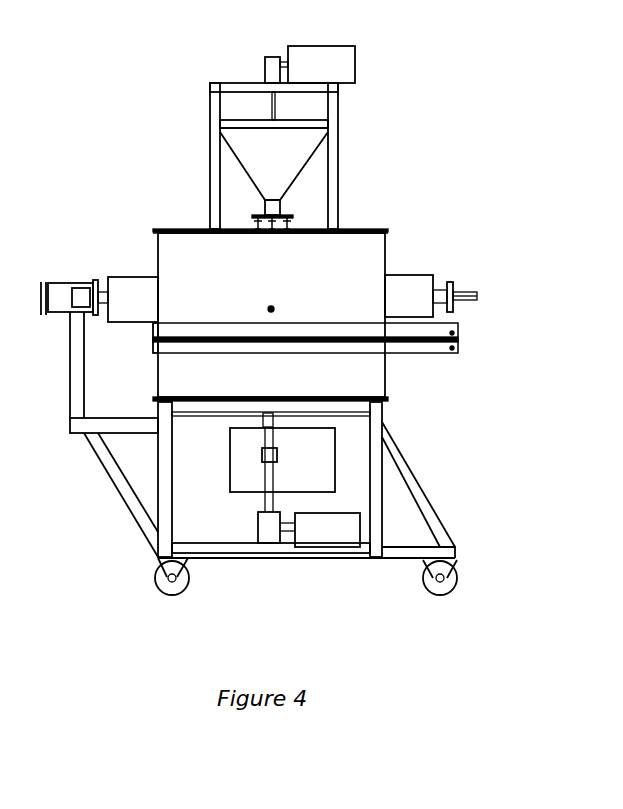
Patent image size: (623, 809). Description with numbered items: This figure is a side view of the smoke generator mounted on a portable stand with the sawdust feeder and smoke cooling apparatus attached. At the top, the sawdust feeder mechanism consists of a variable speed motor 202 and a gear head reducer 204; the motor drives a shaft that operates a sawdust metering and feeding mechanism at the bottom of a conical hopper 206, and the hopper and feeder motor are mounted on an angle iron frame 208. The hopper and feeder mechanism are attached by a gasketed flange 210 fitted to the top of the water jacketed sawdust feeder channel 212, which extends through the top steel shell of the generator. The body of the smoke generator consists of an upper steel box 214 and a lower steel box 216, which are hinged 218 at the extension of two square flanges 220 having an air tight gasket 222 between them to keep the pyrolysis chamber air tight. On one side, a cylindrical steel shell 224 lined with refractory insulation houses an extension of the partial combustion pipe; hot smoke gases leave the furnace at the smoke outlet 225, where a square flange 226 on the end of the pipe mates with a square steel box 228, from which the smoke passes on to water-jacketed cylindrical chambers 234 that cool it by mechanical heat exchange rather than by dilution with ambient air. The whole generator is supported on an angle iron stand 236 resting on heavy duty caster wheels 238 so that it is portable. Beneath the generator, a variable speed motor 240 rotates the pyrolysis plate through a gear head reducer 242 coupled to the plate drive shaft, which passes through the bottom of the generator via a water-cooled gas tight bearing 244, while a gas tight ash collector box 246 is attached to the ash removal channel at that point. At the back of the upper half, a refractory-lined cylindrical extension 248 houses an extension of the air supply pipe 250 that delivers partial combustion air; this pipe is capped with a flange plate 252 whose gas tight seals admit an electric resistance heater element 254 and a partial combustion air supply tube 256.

The variable speed motor 202 is at (312, 57).
The gear head reducer 204 is at (272, 67).
The conical hopper 206 is at (307, 147).
The angle iron frame 208 is at (215, 147).
The gasketed flange 210 is at (287, 215).
The water jacketed sawdust feeder channel 212 is at (260, 215).
The upper steel box 214 is at (373, 252).
The lower steel box 216 is at (373, 370).
The hinge 218 is at (460, 337).
The square flanges 220 is at (125, 345).
The air tight gasket 222 is at (195, 342).
The cylindrical steel shell 224 is at (143, 282).
The smoke outlet 225 is at (104, 303).
The square flange 226 is at (97, 290).
The square steel box 228 is at (82, 293).
The cylindrical chambers 234 is at (63, 287).
The angle iron stand 236 is at (403, 467).
The caster wheels 238 is at (453, 580).
The variable speed motor 240 is at (318, 533).
The gear head reducer 242 is at (267, 533).
The water-cooled gas tight bearing 244 is at (384, 412).
The ash collector box 246 is at (328, 469).
The cylindrical extension 248 is at (398, 282).
The air supply pipe 250 is at (442, 288).
The flange plate 252 is at (450, 285).
The electric resistance heater element 254 is at (470, 300).
The partial combustion air supply tube 256 is at (470, 293).